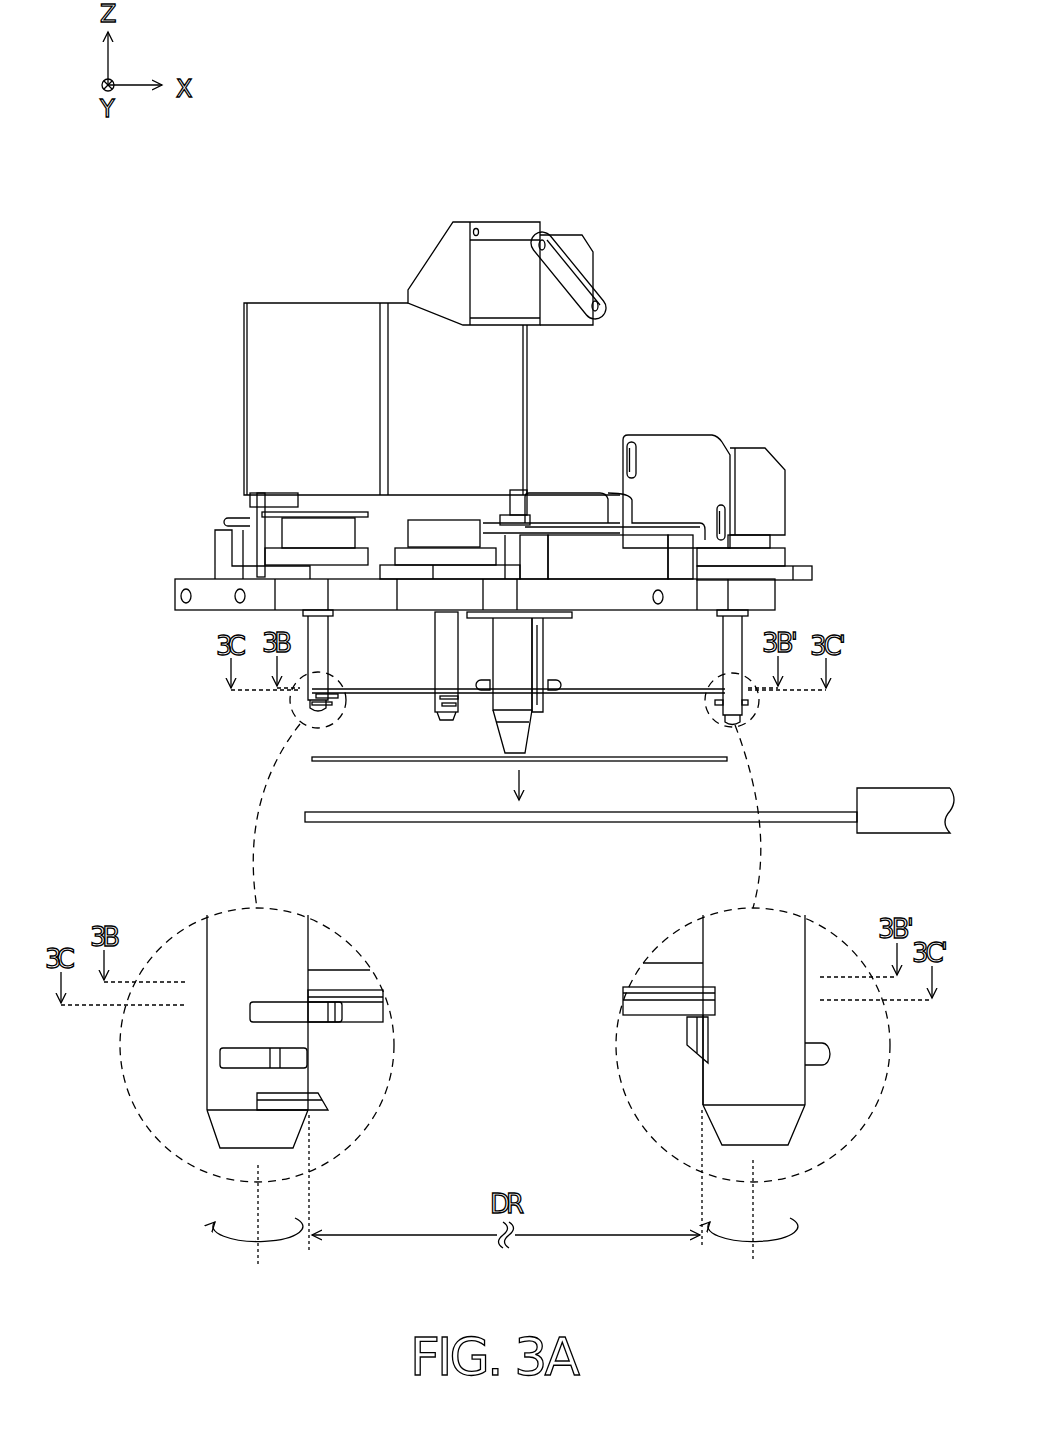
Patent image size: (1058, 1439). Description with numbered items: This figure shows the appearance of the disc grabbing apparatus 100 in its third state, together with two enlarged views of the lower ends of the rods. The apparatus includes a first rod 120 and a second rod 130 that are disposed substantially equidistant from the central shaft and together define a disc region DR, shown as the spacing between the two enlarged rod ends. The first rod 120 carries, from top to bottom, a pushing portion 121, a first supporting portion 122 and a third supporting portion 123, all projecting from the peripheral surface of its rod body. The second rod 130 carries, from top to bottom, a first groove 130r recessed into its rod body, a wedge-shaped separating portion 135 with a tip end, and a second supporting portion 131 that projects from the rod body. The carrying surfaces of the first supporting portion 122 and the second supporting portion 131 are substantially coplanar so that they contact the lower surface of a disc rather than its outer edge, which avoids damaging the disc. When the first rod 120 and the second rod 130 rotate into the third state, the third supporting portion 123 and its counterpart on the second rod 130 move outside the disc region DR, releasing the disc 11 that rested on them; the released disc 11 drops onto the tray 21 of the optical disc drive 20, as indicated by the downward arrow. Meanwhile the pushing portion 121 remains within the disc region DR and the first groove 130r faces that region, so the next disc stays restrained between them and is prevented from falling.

The disc grabbing apparatus 100 is at (385, 180).
The disc 11 is at (690, 763).
The optical disc drive 20 is at (903, 800).
The tray 21 is at (510, 824).
The pushing portion 121 is at (317, 1013).
The first supporting portion 122 is at (237, 1058).
The third supporting portion 123 is at (315, 1100).
The first rod 120 is at (200, 1136).
The separating portion 135 is at (695, 1035).
The first groove 130r is at (700, 1005).
The second supporting portion 131 is at (815, 1055).
The second rod 130 is at (803, 1138).